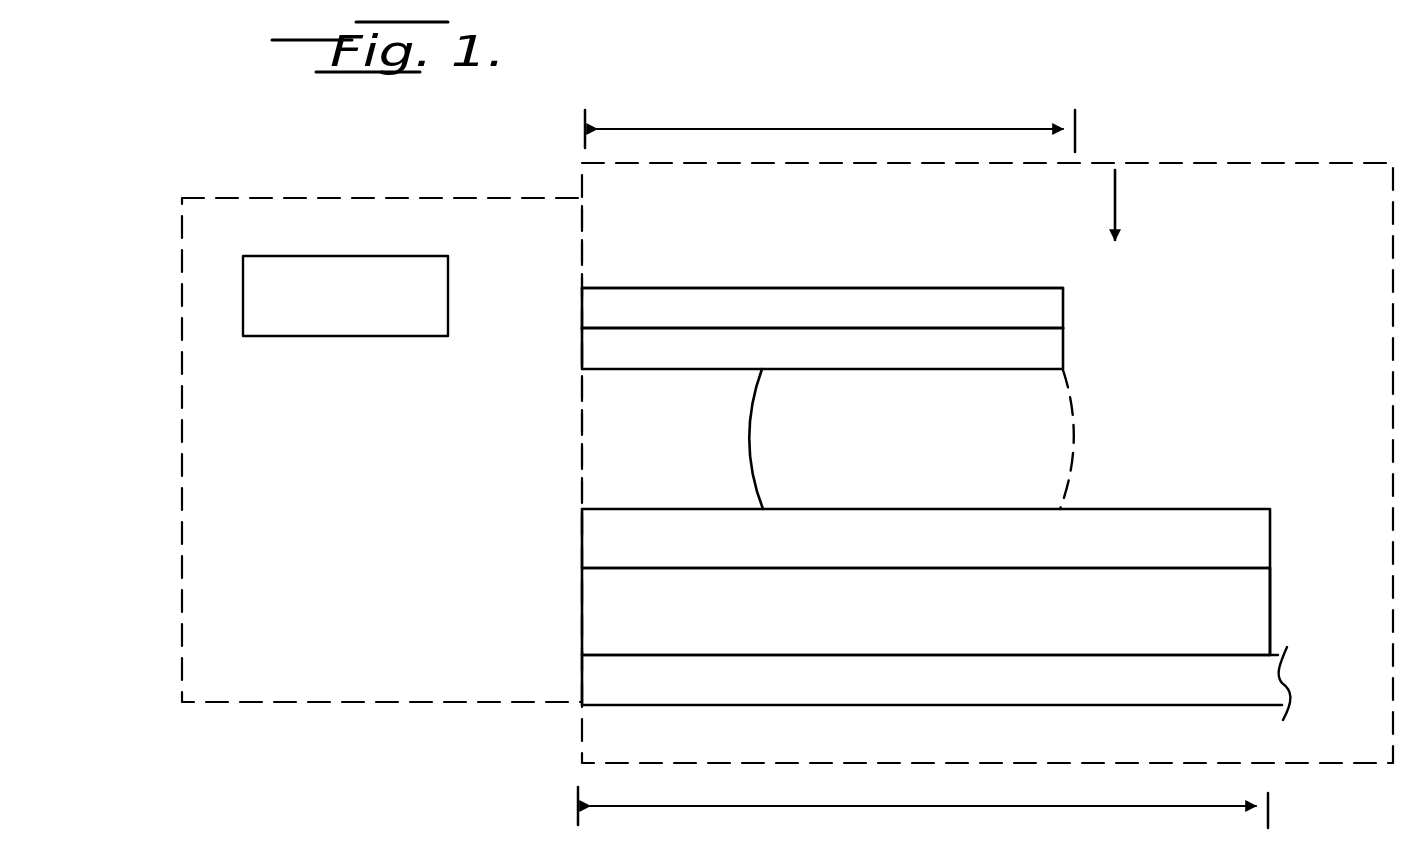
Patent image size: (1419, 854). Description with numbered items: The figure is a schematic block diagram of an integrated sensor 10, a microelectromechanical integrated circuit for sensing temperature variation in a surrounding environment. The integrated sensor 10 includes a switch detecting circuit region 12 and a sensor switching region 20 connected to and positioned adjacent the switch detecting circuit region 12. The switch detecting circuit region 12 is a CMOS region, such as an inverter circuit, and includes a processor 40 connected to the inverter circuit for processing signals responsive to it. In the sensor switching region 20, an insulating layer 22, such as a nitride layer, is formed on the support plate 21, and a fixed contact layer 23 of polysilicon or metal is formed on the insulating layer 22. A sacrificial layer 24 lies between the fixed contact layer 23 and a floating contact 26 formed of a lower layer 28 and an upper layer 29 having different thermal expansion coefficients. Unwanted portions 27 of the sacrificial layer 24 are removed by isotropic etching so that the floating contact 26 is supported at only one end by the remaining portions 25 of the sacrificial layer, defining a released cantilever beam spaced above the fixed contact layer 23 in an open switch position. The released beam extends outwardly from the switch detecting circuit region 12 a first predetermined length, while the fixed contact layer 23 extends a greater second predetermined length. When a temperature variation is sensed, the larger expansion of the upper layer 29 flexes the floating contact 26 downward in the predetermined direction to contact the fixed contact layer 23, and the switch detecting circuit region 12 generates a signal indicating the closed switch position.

The integrated sensor 10 is at (608, 84).
The switch detecting circuit region 12 is at (400, 678).
The sensor switching region 20 is at (987, 463).
The support plate 21 is at (1097, 699).
The insulating layer 22 is at (1145, 624).
The fixed contact layer 23 is at (1170, 559).
The sacrificial layer 24 is at (1082, 436).
The remaining portions of the sacrificial layer 25 is at (752, 440).
The floating contact 26 is at (898, 330).
The unwanted portions of the sacrificial layer 27 is at (910, 473).
The lower layer 28 is at (940, 370).
The upper layer 29 is at (948, 250).
The processor 40 is at (320, 256).